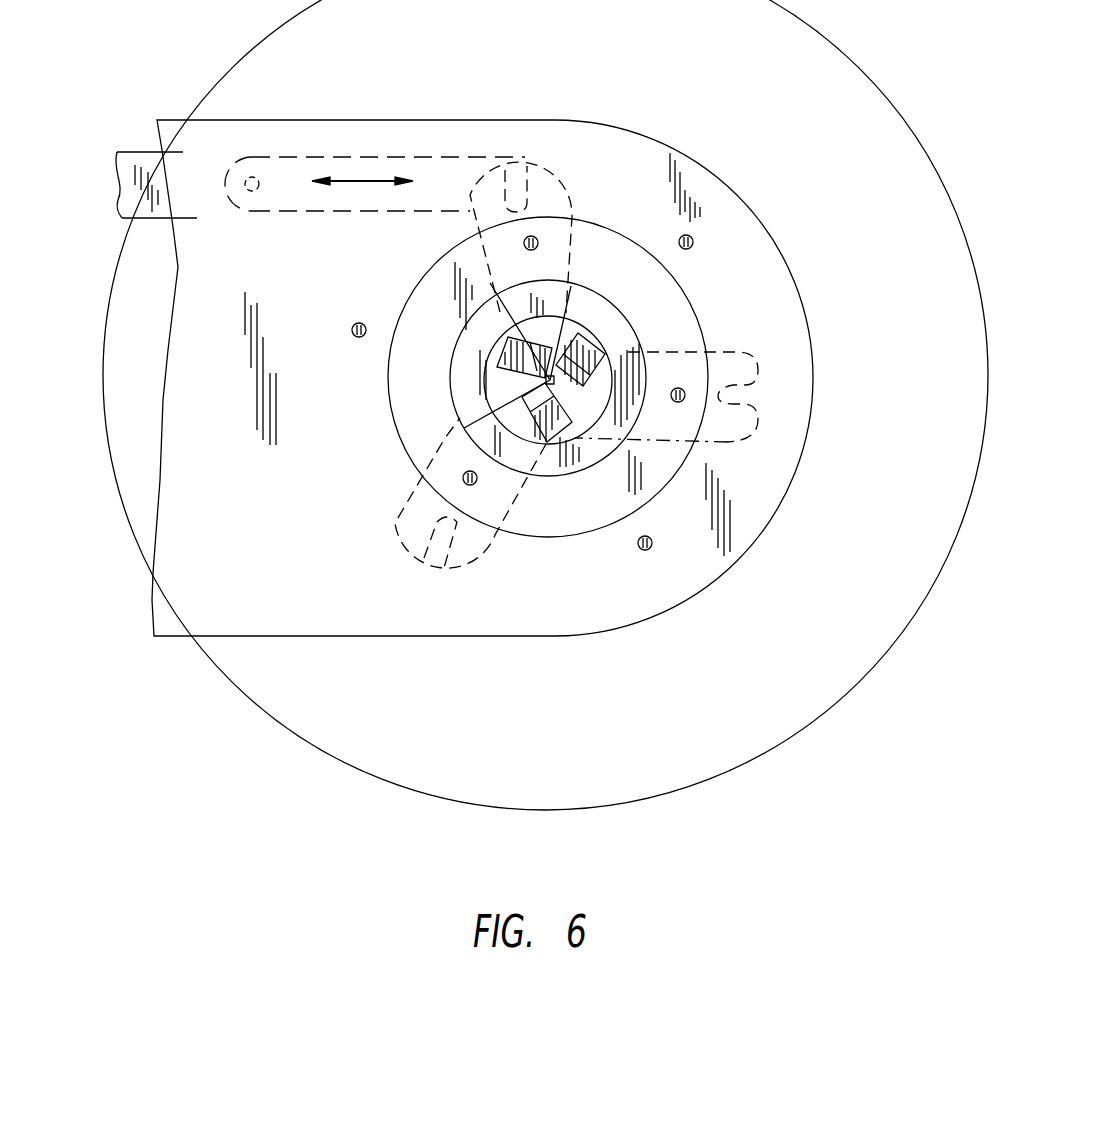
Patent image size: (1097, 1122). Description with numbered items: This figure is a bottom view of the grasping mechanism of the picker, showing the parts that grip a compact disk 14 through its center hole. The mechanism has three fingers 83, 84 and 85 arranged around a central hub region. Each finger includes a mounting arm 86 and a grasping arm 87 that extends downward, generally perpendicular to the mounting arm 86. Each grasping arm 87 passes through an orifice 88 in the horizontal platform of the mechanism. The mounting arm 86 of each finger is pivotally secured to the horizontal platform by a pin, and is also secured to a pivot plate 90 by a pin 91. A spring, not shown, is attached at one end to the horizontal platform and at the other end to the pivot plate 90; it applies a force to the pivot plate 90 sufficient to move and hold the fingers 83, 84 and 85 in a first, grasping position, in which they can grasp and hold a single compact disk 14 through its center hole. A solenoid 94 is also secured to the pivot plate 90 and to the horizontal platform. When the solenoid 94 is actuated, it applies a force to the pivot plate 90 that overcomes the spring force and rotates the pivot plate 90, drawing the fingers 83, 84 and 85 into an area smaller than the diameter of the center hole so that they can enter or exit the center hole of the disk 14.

The compact disk 14 is at (867, 192).
The finger 83 is at (510, 305).
The finger 84 is at (662, 373).
The finger 85 is at (498, 518).
The mounting arm 86 is at (557, 300).
The grasping arm 87 is at (583, 332).
The orifice 88 is at (550, 380).
The pivot plate 90 is at (687, 455).
The pin 91 is at (540, 243).
The solenoid 94 is at (200, 167).